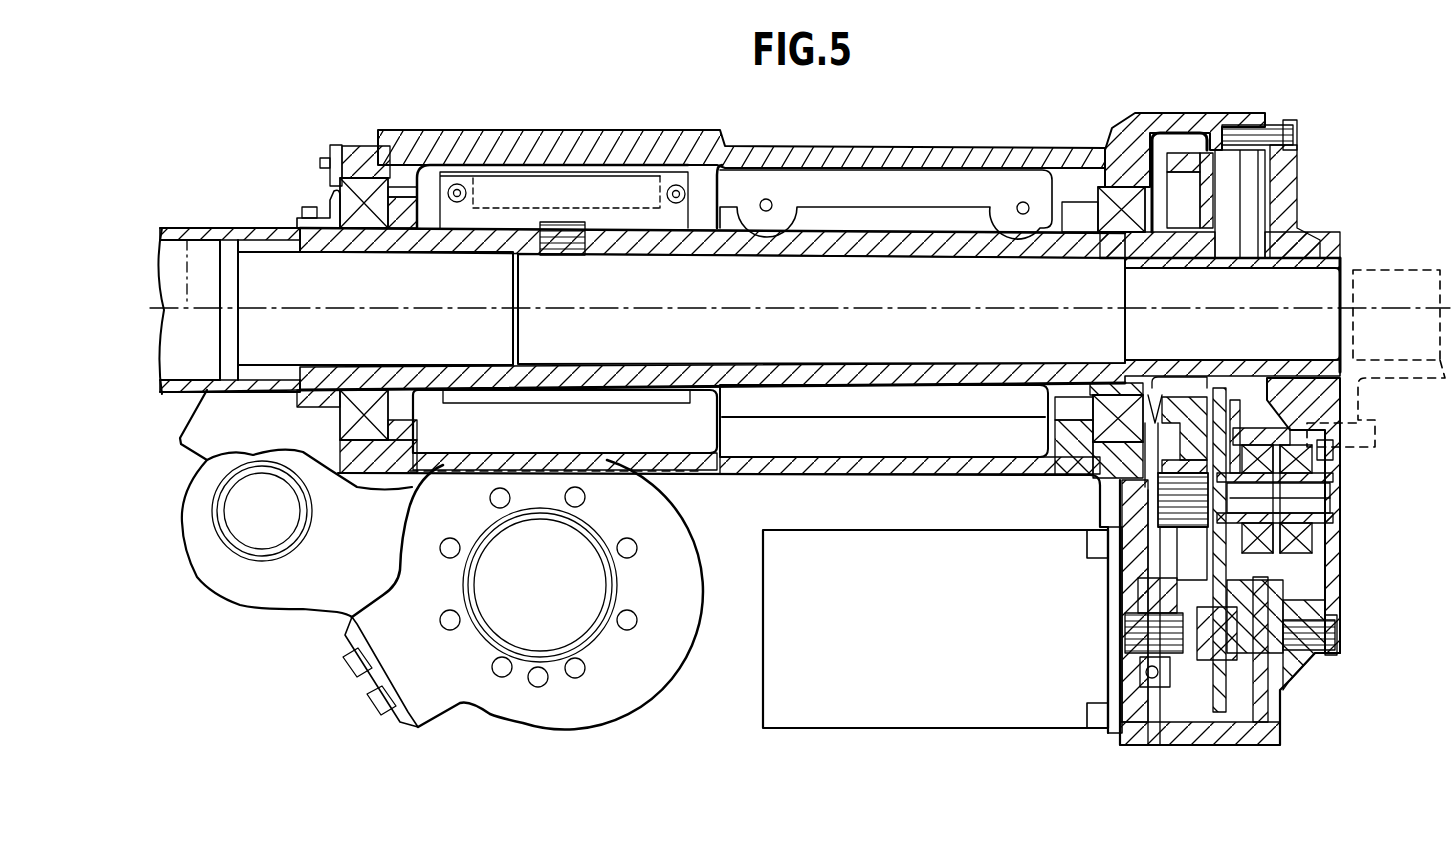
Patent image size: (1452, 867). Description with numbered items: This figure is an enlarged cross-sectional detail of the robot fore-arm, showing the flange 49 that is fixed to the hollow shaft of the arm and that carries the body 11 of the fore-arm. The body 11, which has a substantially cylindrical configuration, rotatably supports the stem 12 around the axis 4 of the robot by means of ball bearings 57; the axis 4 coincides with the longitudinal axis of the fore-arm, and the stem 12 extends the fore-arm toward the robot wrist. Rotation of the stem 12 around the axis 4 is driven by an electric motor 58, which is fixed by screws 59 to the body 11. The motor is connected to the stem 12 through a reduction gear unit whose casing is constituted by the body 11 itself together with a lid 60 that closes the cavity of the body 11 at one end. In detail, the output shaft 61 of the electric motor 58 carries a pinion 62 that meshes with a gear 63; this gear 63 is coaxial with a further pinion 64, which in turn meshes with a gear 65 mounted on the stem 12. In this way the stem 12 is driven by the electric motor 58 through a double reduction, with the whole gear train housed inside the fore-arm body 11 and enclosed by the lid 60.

The axis 4 is at (190, 248).
The stem 12 is at (268, 226).
The body of the fore-arm 11 is at (925, 148).
The ball bearings 57 is at (367, 172).
The flange 49 is at (602, 690).
The electric motor 58 is at (938, 712).
The screws 59 is at (1092, 542).
The lid 60 is at (1282, 215).
The output shaft 61 is at (1190, 738).
The pinion 62 is at (1258, 655).
The gear 63 is at (1230, 595).
The pinion 64 is at (1128, 572).
The gear 65 is at (1225, 185).